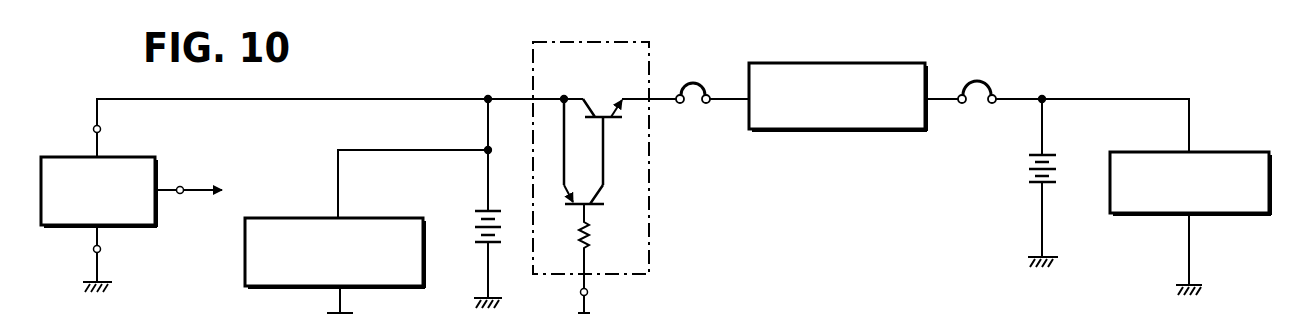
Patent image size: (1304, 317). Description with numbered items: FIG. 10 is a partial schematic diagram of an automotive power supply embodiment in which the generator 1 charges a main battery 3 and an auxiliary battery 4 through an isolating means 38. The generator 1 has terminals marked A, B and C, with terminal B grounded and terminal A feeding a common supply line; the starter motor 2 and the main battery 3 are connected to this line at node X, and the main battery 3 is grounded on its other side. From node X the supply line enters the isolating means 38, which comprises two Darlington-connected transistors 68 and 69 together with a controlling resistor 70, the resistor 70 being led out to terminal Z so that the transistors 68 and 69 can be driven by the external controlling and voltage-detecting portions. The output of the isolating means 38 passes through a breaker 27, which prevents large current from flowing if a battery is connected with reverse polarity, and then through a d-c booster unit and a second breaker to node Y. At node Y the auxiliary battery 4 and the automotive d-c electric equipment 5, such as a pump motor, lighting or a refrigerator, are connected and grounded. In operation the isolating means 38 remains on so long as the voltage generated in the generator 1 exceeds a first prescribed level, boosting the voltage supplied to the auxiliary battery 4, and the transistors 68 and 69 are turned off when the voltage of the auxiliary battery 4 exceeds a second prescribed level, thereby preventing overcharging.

The generator 1 is at (66, 157).
The starter motor 2 is at (285, 218).
The main battery 3 is at (476, 226).
The auxiliary battery 4 is at (1028, 167).
The d-c electric equipment 5 is at (1231, 152).
The breaker 27 is at (693, 88).
The isolating means 38 is at (650, 193).
The transistor 68 is at (602, 114).
The transistor 69 is at (588, 200).
The controlling resistor 70 is at (590, 237).
The terminal A is at (101, 129).
The terminal B is at (101, 249).
The terminal C is at (180, 194).
The terminal X is at (488, 96).
The terminal Y is at (1042, 96).
The terminal Z is at (588, 292).